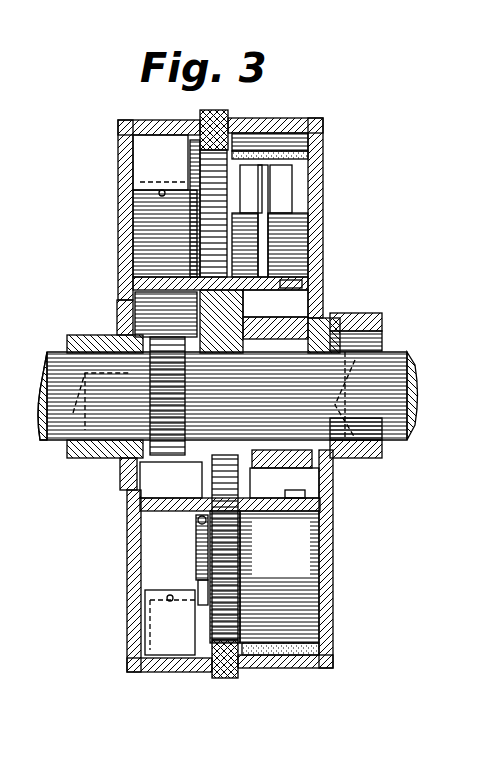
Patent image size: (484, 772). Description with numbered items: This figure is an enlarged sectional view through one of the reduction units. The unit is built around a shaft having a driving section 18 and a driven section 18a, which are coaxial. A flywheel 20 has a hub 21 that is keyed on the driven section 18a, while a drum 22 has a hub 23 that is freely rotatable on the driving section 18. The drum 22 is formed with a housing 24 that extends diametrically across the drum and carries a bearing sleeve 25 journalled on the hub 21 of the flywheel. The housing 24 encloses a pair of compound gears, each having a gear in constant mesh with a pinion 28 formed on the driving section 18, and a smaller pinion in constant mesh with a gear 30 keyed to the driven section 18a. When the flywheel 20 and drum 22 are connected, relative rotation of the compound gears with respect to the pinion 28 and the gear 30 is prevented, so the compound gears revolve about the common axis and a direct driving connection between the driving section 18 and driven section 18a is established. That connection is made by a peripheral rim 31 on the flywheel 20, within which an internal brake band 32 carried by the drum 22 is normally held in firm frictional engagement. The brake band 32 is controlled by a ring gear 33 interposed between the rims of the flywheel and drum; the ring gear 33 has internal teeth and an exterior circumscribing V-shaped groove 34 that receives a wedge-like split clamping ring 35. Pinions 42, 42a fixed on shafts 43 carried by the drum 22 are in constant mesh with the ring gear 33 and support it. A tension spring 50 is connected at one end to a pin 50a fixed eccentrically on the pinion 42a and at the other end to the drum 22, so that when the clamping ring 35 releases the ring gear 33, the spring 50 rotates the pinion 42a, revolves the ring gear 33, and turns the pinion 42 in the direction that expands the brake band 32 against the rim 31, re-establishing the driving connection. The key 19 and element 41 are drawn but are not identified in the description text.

The driving section of the shaft 18 is at (55, 377).
The driven section of the shaft 18a is at (398, 347).
The key 19 is at (105, 401).
The flywheel 20 is at (283, 118).
The hub 21 is at (366, 396).
The drum 22 is at (131, 122).
The hub 23 is at (87, 463).
The housing 24 is at (181, 480).
The bearing sleeve 25 is at (290, 470).
The pinion 28 is at (189, 372).
The gear 30 is at (275, 309).
The peripheral rim 31 is at (297, 668).
The brake band 32 is at (308, 154).
The ring gear 33 is at (230, 528).
The V-shaped groove 34 is at (215, 127).
The clamping ring 35 is at (218, 112).
The piston 41 is at (264, 222).
The pinion 42 is at (195, 236).
The pinion 42a is at (240, 568).
The shafts 43 is at (165, 422).
The tension spring 50 is at (195, 547).
The pin 50a is at (193, 600).